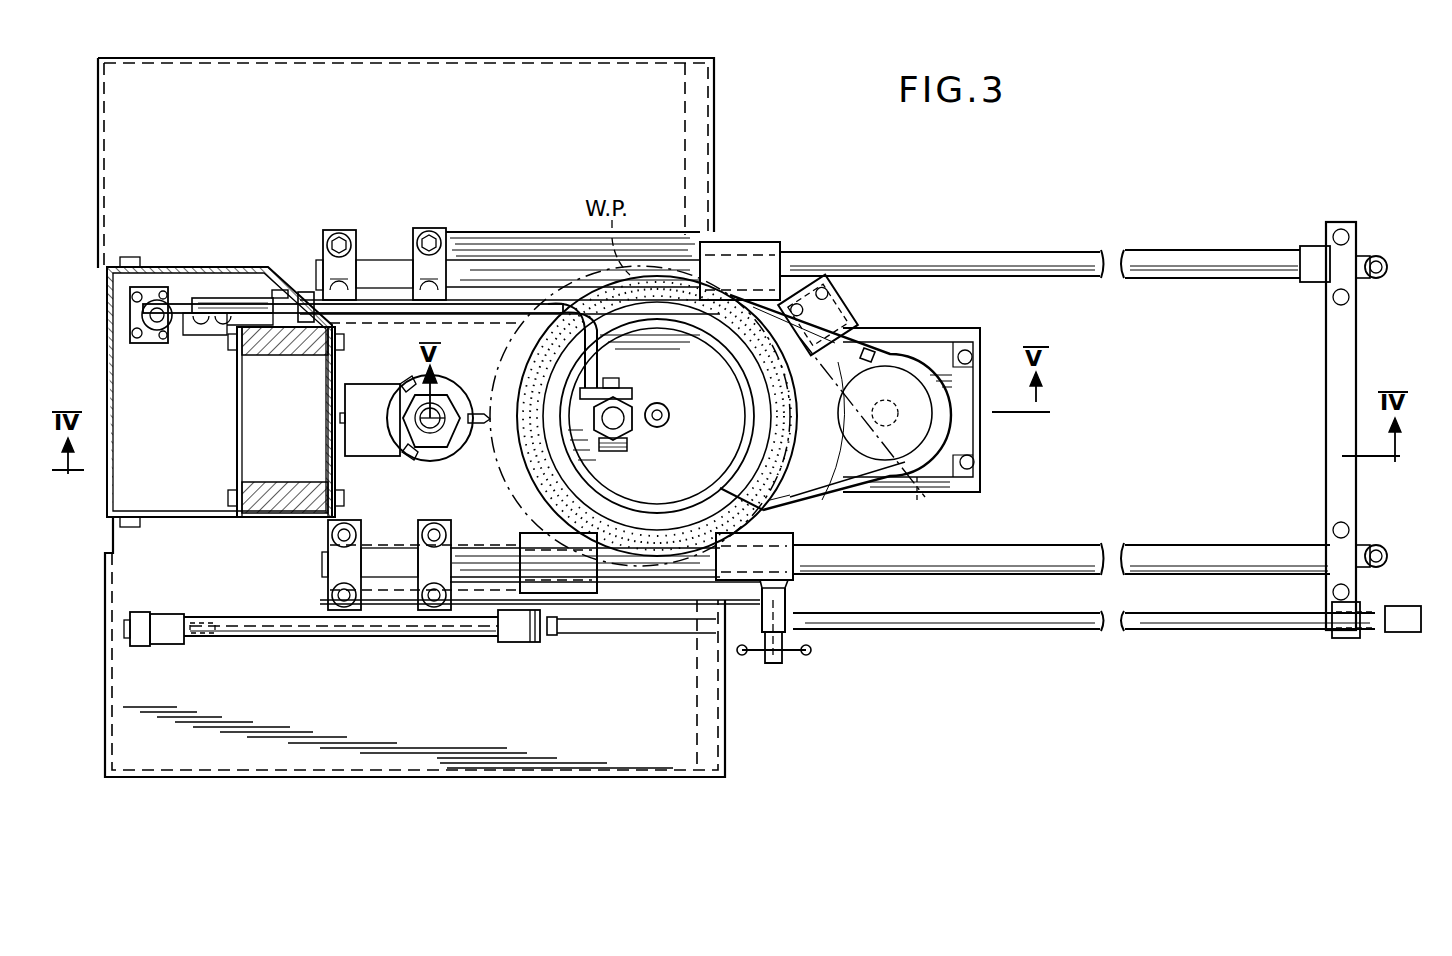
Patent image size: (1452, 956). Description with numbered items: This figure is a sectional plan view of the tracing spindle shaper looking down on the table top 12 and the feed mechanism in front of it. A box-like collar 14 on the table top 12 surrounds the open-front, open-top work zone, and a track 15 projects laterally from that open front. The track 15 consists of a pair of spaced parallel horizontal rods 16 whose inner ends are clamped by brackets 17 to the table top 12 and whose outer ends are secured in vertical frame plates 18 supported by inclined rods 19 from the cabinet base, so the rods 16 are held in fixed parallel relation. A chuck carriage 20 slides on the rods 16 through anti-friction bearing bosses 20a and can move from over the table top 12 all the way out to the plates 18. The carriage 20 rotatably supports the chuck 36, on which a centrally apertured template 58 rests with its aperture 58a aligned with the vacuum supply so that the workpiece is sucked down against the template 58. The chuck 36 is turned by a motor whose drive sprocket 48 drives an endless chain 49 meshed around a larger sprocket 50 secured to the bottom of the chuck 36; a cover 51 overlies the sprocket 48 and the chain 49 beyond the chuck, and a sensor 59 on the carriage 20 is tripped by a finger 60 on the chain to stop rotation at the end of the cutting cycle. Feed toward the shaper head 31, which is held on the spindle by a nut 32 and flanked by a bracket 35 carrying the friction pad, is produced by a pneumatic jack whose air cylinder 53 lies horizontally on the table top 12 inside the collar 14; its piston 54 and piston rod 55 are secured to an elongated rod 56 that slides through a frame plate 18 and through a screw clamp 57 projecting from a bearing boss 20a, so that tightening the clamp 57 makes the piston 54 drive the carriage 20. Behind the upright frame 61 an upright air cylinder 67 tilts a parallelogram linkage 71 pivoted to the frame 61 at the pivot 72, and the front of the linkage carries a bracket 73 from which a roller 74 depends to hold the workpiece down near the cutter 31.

The table top 12 is at (482, 498).
The box-like collar 14 is at (552, 88).
The track 15 is at (1092, 255).
The horizontal rods 16 is at (980, 255).
The brackets 17 is at (422, 237).
The frame plates 18 is at (1328, 356).
The inclined rods 19 is at (1368, 276).
The chuck carriage 20 is at (910, 324).
The bearing bosses 20a is at (740, 242).
The shaper head 31 is at (408, 392).
The nut 32 is at (448, 386).
The bracket 35 is at (378, 455).
The chuck 36 is at (790, 506).
The drive sprocket 48 is at (915, 495).
The endless chain 49 is at (838, 494).
The larger sprocket 50 is at (840, 402).
The cover 51 is at (922, 360).
The air cylinder 53 is at (408, 642).
The piston 54 is at (186, 636).
The piston rod 55 is at (326, 636).
The elongated rod 56 is at (1125, 632).
The screw clamp 57 is at (775, 660).
The template 58 is at (786, 462).
The aperture 58a is at (670, 414).
The sensor 59 is at (856, 292).
The finger 60 is at (870, 352).
The upright frame 61 is at (238, 450).
The upright air cylinder 67 is at (142, 312).
The parallelogram linkage 71 is at (310, 294).
The pivot 72 is at (280, 303).
The bracket 73 is at (626, 402).
The roller 74 is at (622, 450).